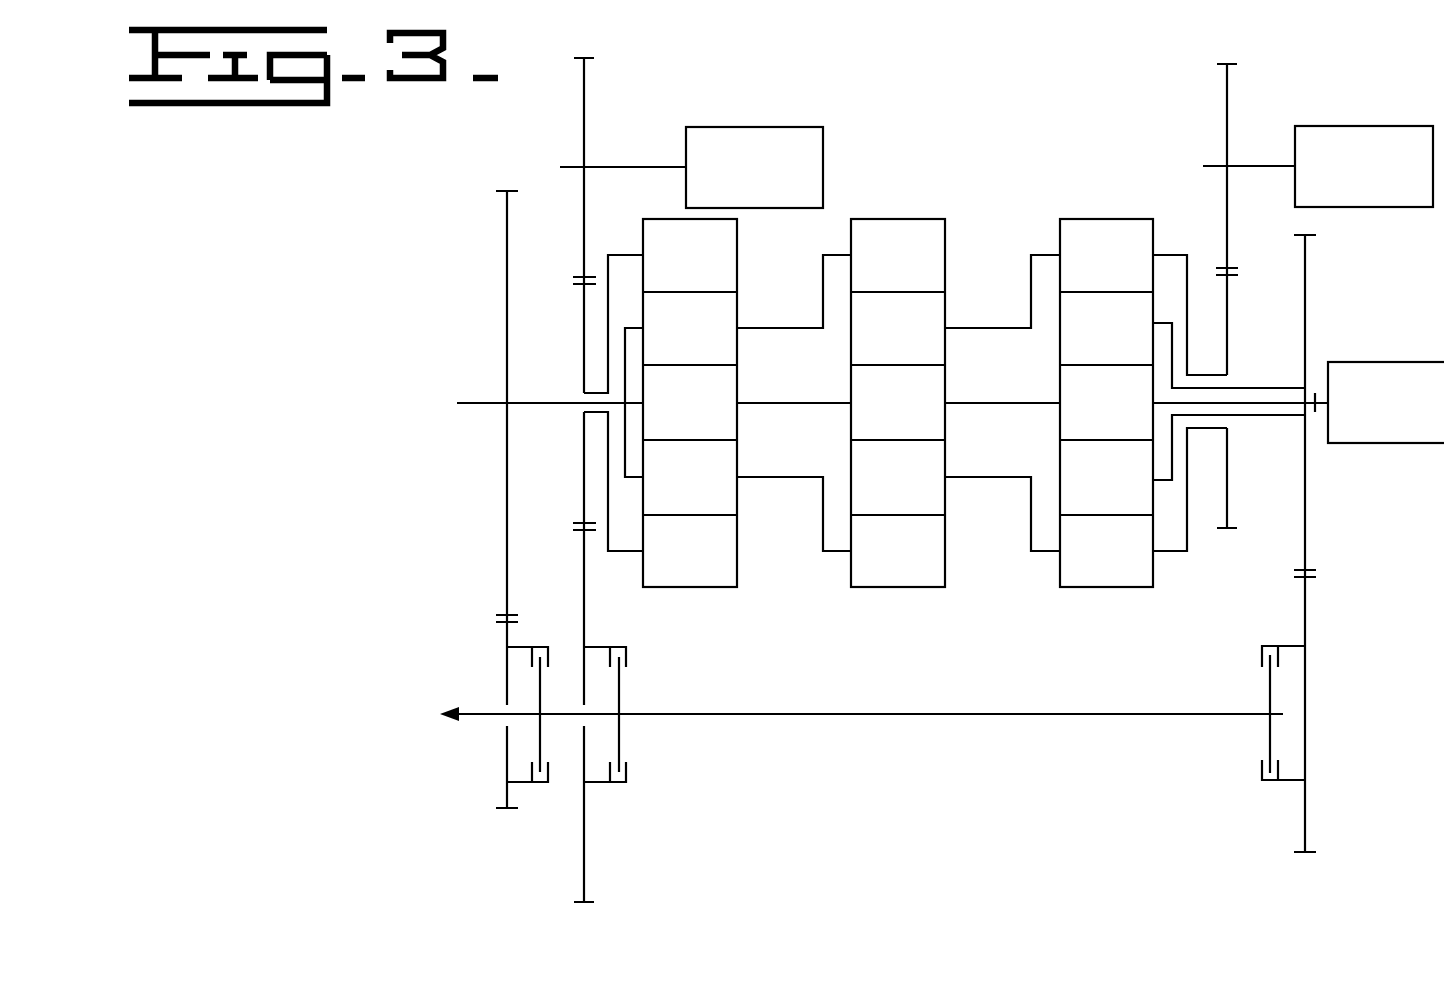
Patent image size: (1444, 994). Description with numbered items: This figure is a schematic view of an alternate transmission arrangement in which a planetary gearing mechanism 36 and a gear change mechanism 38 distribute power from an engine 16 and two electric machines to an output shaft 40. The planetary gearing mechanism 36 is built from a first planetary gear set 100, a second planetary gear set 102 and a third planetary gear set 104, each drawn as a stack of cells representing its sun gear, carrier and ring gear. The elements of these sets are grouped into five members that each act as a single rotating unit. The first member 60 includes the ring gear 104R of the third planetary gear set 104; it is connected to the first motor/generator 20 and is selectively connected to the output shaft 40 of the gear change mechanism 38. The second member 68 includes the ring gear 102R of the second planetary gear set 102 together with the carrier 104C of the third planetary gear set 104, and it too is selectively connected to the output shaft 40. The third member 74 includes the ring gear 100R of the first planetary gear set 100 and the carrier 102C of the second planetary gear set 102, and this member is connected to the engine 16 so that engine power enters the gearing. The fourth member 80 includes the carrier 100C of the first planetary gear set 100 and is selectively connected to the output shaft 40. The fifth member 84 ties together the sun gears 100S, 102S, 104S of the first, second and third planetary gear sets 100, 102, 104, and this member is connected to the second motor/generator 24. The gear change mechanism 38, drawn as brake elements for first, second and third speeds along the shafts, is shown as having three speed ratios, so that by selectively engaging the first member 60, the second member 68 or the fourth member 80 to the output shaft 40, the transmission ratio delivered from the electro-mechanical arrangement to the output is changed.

The engine 16 is at (1337, 127).
The first motor/generator 20 is at (752, 127).
The second motor/generator 24 is at (1424, 362).
The planetary gearing mechanism 36 is at (946, 656).
The gear change mechanism 38 is at (745, 768).
The output shaft 40 is at (968, 716).
The first member 60 is at (630, 255).
The second member 68 is at (562, 403).
The third member 74 is at (1177, 252).
The fourth member 80 is at (1284, 388).
The fifth member 84 is at (1286, 415).
The first planetary gear set 100 is at (1109, 445).
The sun gear 100S is at (1058, 396).
The carrier 100C is at (1058, 478).
The ring gear 100R is at (1153, 570).
The second planetary gear set 102 is at (940, 447).
The sun gear 102S is at (945, 408).
The carrier 102C is at (945, 336).
The ring gear 102R is at (945, 551).
The third planetary gear set 104 is at (733, 452).
The sun gear 104S is at (737, 372).
The carrier 104C is at (737, 447).
The ring gear 104R is at (737, 551).